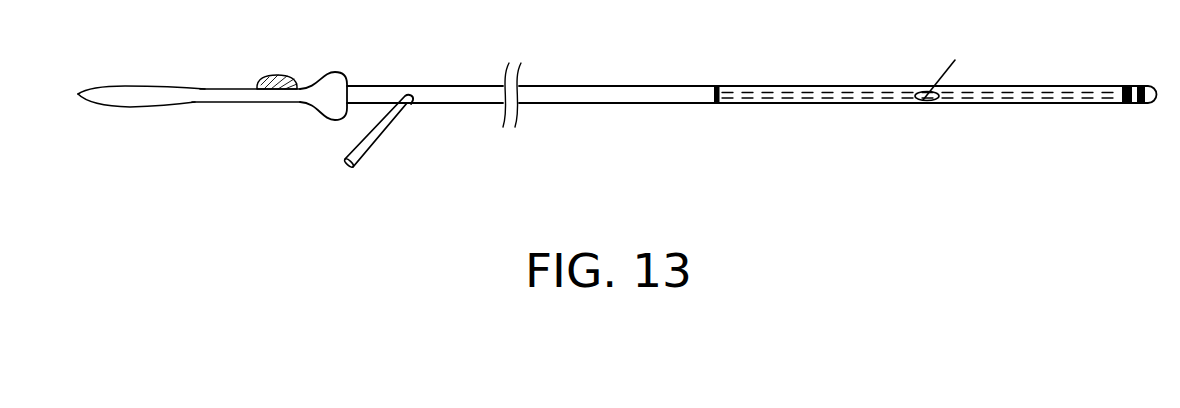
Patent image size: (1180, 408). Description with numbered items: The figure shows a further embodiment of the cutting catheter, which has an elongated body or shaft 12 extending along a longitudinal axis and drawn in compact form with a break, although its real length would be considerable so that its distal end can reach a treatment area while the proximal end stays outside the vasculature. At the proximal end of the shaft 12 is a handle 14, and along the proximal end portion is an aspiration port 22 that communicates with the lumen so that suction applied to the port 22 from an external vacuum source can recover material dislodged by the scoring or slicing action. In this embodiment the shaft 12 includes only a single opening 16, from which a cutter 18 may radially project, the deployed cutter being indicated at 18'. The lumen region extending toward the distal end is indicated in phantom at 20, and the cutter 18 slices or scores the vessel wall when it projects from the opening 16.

The shaft 12 is at (607, 87).
The handle 14 is at (138, 86).
The aspiration port 22 is at (385, 142).
The opening 16 is at (925, 101).
The cutter 18 is at (920, 57).
The radially projecting cutter 18' is at (920, 66).
The lumen 20 is at (1030, 100).